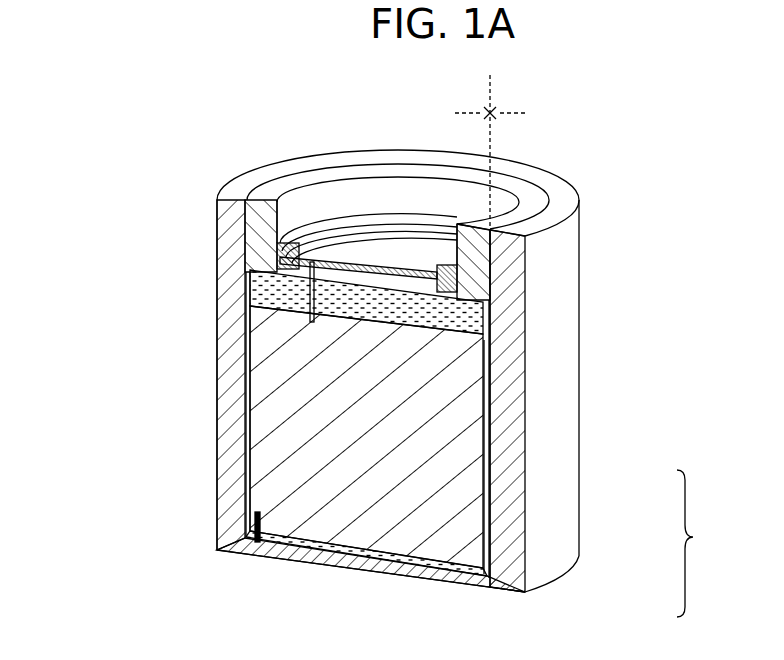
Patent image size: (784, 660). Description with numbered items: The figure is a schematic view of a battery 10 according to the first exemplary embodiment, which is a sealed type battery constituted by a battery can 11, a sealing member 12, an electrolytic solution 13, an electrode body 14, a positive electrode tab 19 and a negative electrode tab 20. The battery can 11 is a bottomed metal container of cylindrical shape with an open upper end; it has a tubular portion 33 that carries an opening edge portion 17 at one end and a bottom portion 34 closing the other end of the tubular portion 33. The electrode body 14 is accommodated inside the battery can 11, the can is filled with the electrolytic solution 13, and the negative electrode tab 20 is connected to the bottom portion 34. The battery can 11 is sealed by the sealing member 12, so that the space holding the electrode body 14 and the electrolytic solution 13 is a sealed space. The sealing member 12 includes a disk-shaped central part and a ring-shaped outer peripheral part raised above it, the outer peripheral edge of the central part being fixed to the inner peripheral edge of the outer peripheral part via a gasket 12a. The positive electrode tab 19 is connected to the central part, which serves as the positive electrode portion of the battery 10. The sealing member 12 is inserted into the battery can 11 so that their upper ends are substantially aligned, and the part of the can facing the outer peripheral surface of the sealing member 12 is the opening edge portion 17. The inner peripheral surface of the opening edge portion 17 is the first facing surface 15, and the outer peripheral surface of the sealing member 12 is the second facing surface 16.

The battery 10 is at (640, 168).
The battery can 11 is at (703, 543).
The sealing member 12 is at (276, 190).
The gasket 12a is at (463, 283).
The electrolytic solution 13 is at (255, 274).
The electrode body 14 is at (365, 548).
The first facing surface 15 is at (526, 342).
The second facing surface 16 is at (458, 152).
The opening edge portion 17 is at (217, 204).
The positive electrode tab 19 is at (312, 290).
The negative electrode tab 20 is at (256, 513).
The tubular portion 33 is at (578, 525).
The bottom portion 34 is at (423, 572).